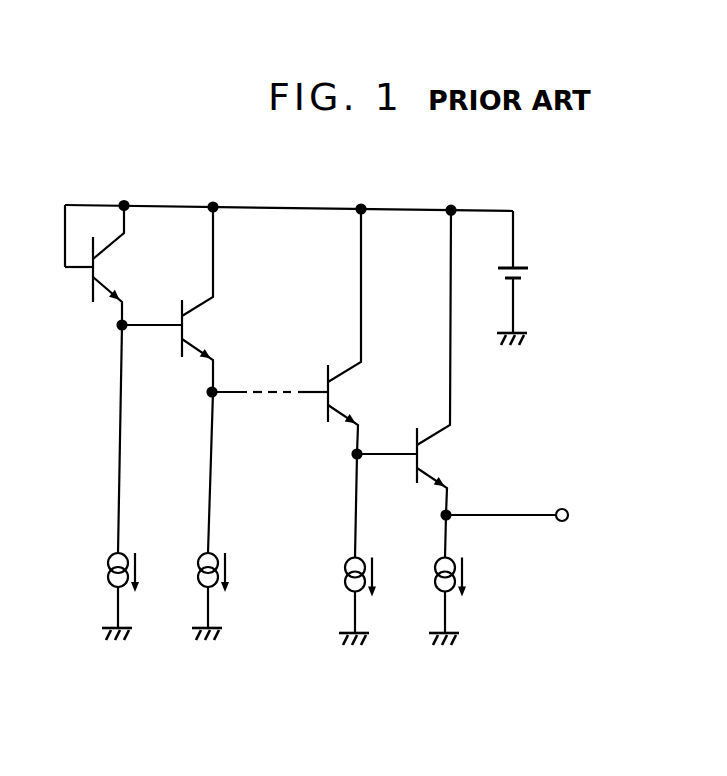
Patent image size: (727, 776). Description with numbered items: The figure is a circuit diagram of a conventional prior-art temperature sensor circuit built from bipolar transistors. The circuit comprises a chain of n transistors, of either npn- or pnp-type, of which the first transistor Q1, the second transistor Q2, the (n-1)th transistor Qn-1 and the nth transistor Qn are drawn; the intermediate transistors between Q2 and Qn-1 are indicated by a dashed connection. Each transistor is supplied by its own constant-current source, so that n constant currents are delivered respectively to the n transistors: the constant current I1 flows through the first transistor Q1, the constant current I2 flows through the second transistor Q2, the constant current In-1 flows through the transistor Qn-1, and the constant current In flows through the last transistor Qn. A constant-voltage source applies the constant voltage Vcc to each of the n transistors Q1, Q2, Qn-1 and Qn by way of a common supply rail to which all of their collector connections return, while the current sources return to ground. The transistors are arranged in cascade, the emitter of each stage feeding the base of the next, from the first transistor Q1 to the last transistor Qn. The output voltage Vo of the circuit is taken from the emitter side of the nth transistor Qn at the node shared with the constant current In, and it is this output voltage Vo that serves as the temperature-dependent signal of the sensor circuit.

The transistor Q1 is at (103, 265).
The transistor Q2 is at (175, 299).
The transistor Qn-1 is at (303, 331).
The transistor Qn is at (410, 362).
The constant current I1 is at (130, 482).
The constant current I2 is at (220, 516).
The constant current In-1 is at (378, 549).
The constant current In is at (459, 580).
The constant voltage Vcc is at (538, 278).
The output voltage Vo is at (524, 517).